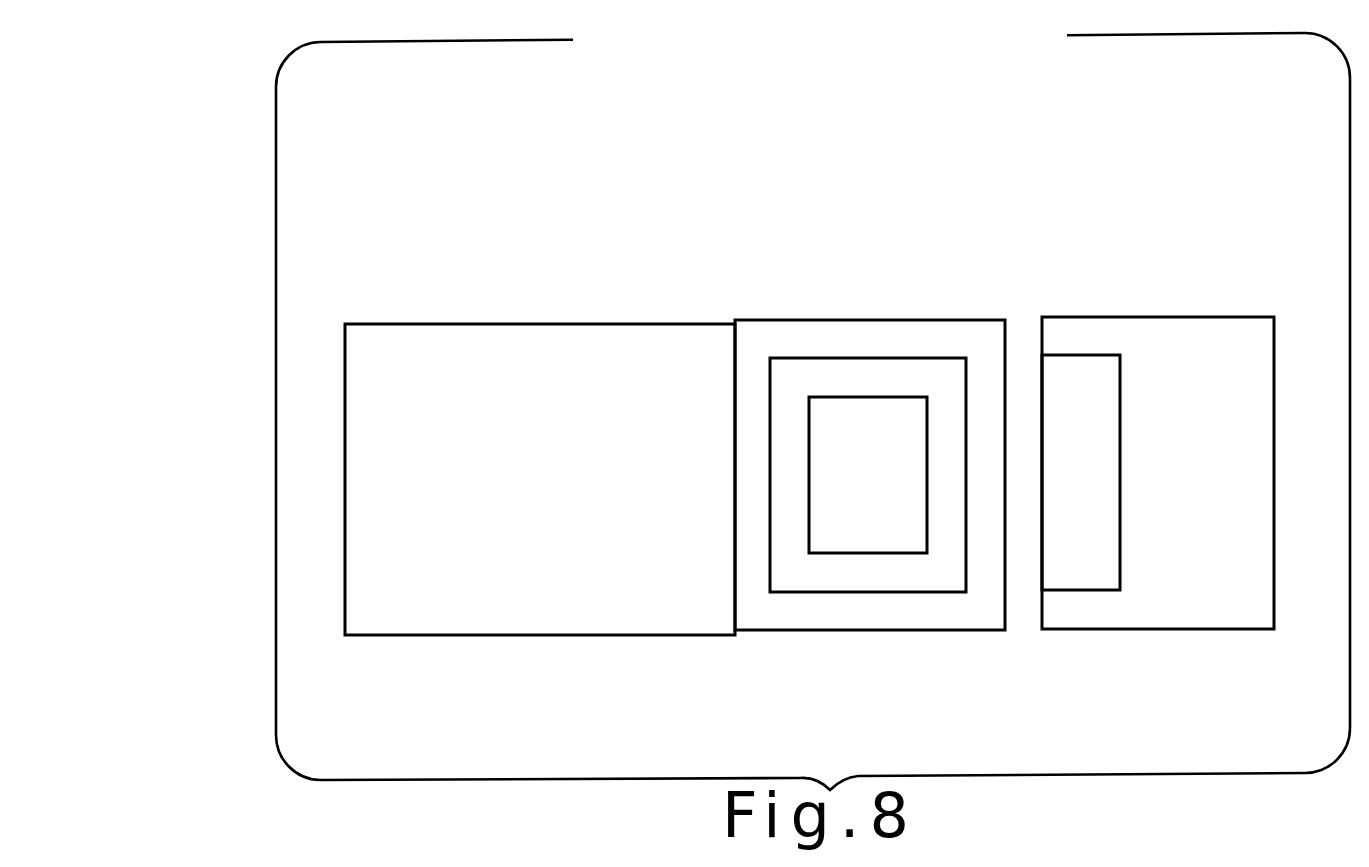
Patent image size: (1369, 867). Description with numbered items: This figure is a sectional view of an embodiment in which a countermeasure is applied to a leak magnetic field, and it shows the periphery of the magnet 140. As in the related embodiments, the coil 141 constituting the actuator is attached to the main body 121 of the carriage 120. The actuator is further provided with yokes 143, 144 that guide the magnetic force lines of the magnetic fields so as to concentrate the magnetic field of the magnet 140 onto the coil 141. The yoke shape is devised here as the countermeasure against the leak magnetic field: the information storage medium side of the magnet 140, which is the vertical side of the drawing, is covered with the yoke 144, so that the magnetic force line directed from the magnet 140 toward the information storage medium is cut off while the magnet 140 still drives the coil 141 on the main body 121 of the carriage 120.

The carriage 120 is at (682, 207).
The main body 121 is at (586, 625).
The magnet 140 is at (1078, 402).
The coil 141 is at (863, 620).
The yoke 143 is at (905, 531).
The yoke 144 is at (1224, 614).